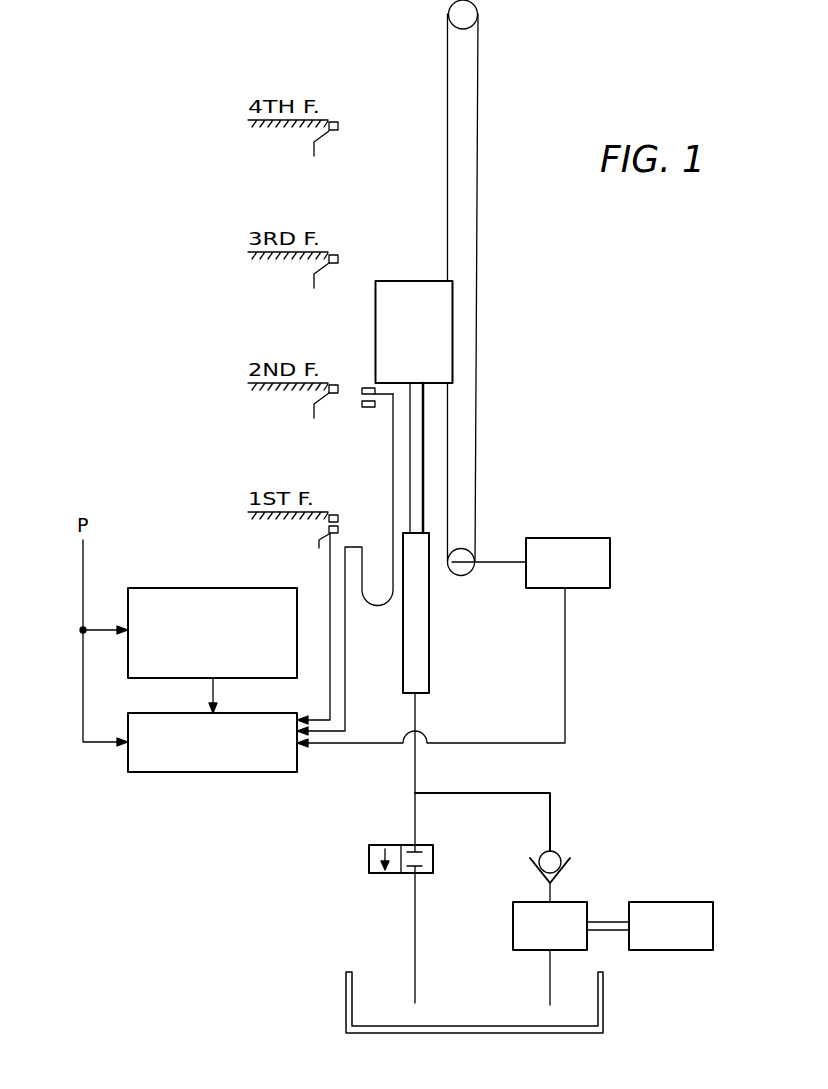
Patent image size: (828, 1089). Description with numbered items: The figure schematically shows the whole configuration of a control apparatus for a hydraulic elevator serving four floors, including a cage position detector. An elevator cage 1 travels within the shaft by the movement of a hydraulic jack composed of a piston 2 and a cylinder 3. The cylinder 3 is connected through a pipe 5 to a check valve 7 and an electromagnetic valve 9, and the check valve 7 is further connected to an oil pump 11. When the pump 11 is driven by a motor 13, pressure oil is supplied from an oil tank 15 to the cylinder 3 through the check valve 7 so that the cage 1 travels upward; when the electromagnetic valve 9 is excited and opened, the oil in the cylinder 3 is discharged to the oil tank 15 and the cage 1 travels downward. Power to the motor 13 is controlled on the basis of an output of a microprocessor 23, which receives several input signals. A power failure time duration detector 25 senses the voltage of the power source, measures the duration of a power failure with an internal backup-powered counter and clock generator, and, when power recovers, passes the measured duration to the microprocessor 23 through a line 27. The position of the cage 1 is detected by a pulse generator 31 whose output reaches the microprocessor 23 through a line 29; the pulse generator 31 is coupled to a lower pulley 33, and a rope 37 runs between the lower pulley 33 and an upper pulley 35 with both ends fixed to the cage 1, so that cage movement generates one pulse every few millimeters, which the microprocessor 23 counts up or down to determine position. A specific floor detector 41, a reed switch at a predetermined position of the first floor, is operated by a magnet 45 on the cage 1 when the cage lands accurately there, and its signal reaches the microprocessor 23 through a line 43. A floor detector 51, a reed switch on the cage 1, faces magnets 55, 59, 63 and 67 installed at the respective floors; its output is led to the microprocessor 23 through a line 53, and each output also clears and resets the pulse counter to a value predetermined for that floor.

The elevator cage 1 is at (410, 281).
The piston 2 is at (423, 440).
The cylinder 3 is at (429, 636).
The pipe 5 is at (533, 791).
The check valve 7 is at (560, 855).
The electromagnetic valve 9 is at (369, 858).
The oil pump 11 is at (574, 902).
The motor 13 is at (690, 902).
The oil tank 15 is at (603, 1000).
The microprocessor 23 is at (185, 772).
The power failure time duration detector 25 is at (177, 588).
The line 27 is at (213, 702).
The line 29 is at (565, 640).
The pulse generator 31 is at (610, 562).
The lower pulley 33 is at (462, 548).
The upper pulley 35 is at (466, 29).
The rope 37 is at (478, 238).
The specific floor detector 41 is at (338, 529).
The line 43 is at (330, 573).
The magnet 45 is at (366, 409).
The floor detector 51 is at (368, 388).
The line 53 is at (379, 605).
The magnet 55 is at (336, 515).
The magnet 59 is at (337, 394).
The magnet 63 is at (338, 259).
The magnet 67 is at (338, 126).